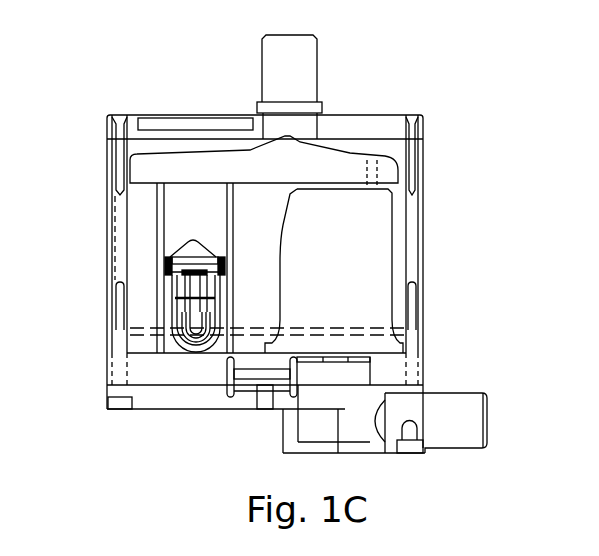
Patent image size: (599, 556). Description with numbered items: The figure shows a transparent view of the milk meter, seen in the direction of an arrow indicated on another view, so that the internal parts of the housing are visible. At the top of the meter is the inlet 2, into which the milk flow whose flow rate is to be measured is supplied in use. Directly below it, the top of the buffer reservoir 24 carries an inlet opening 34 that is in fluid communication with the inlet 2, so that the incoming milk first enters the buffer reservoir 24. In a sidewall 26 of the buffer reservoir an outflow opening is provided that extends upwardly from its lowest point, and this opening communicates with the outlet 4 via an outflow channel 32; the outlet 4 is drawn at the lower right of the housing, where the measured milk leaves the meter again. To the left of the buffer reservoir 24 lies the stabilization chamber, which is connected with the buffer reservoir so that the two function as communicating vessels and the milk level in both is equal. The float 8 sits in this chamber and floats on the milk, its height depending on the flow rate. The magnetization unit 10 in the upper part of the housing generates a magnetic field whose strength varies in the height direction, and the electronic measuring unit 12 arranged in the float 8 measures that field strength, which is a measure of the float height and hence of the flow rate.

The magnetization unit 10 is at (195, 122).
The inlet 2 is at (318, 63).
The inlet opening 34 is at (315, 132).
The outflow channel 32 is at (360, 260).
The buffer reservoir 24 is at (257, 308).
The sidewall 26 is at (280, 295).
The float 8 is at (175, 301).
The electronic measuring unit 12 is at (178, 318).
The outlet 4 is at (490, 416).